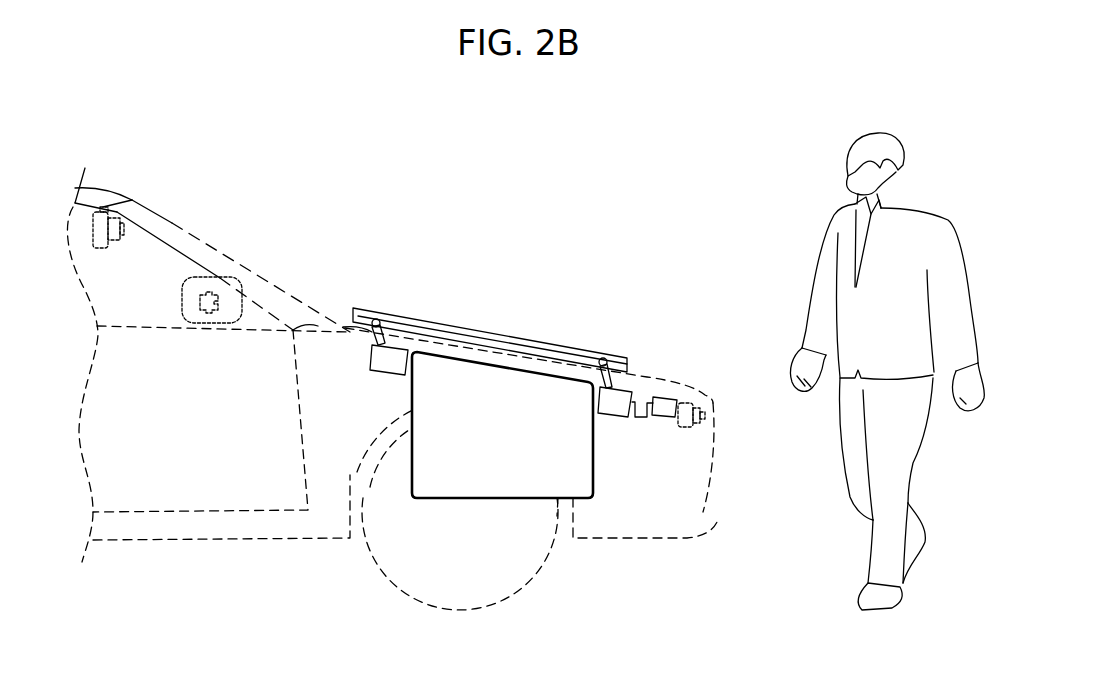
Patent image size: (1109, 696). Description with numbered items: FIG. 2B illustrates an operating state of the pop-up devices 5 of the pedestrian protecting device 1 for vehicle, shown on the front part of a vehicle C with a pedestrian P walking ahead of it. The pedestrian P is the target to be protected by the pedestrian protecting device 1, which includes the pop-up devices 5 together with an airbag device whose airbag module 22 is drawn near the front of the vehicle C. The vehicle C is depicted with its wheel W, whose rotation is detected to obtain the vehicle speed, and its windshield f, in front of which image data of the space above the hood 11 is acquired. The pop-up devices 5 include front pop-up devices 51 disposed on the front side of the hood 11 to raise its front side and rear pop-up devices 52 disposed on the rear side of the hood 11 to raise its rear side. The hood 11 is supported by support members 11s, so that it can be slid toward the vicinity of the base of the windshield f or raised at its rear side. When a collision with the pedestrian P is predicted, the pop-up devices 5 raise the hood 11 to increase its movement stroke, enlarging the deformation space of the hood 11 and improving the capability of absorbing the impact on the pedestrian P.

The vehicle C is at (212, 207).
The windshield f is at (246, 264).
The wheel W is at (397, 585).
The pop-up devices 5 is at (613, 283).
The pedestrian protecting device for vehicle 1 is at (509, 388).
The hood 11 is at (537, 340).
The support members 11s is at (372, 338).
The rear pop-up devices 52 is at (380, 378).
The front pop-up devices 51 is at (612, 418).
The airbag module 22 is at (662, 418).
The pedestrian P is at (827, 237).